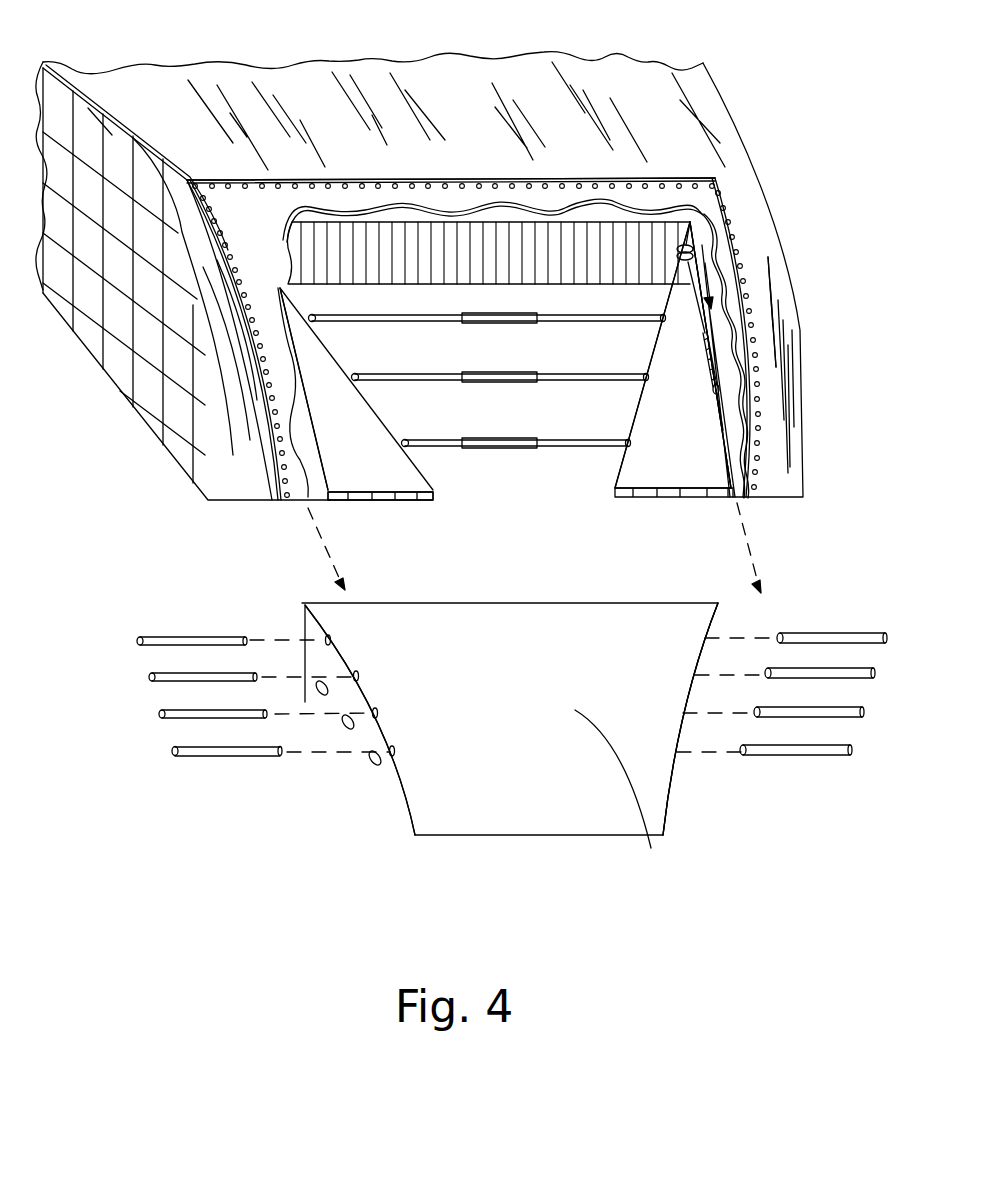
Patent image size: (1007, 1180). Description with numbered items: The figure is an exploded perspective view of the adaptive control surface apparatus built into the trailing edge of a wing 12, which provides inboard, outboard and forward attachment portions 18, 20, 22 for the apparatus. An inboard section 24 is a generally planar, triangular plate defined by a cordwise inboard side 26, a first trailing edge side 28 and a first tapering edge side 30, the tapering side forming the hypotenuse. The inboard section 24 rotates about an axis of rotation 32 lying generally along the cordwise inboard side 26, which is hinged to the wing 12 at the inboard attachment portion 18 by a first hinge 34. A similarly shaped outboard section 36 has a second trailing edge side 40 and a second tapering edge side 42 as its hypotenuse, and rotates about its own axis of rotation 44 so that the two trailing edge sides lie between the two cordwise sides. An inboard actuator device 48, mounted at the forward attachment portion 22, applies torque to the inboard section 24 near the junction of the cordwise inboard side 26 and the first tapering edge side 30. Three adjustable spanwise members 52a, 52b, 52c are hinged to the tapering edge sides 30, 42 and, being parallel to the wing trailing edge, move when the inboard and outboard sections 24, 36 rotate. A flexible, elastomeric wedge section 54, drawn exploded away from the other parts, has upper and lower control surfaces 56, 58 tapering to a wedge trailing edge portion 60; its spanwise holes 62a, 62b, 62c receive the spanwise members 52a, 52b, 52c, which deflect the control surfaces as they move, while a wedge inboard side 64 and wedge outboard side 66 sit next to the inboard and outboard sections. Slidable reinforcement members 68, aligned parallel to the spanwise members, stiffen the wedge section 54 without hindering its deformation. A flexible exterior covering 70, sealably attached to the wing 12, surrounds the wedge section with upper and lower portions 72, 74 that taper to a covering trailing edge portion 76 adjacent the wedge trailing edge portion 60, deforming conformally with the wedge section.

The wing 12 is at (518, 70).
The inboard attachment portion 18 is at (710, 300).
The outboard attachment portion 20 is at (310, 378).
The forward attachment portion 22 is at (400, 284).
The inboard section 24 is at (685, 478).
The cordwise inboard side 26 is at (723, 442).
The first trailing edge side 28 is at (628, 502).
The first tapering edge side 30 is at (640, 417).
The axis of rotation 32 is at (745, 528).
The first hinge 34 is at (714, 366).
The outboard section 36 is at (402, 472).
The second trailing edge side 40 is at (348, 505).
The second tapering edge side 42 is at (382, 418).
The axis of rotation 44 is at (327, 543).
The inboard actuator device 48 is at (700, 210).
The spanwise member 52a is at (550, 447).
The spanwise member 52b is at (550, 380).
The spanwise member 52c is at (563, 322).
The flexible wedge section 54 is at (648, 836).
The upper control surface 56 is at (522, 810).
The lower control surface 58 is at (584, 850).
The wedge trailing edge portion 60 is at (488, 820).
The spanwise hole 62a is at (372, 762).
The spanwise hole 62b is at (344, 726).
The spanwise hole 62c is at (318, 692).
The wedge inboard side 64 is at (690, 782).
The wedge outboard side 66 is at (403, 807).
The reinforcement members 68 is at (173, 750).
The flexible exterior covering 70 is at (362, 185).
The upper portion 72 is at (662, 187).
The lower portion 74 is at (297, 517).
The covering trailing edge portion 76 is at (288, 502).